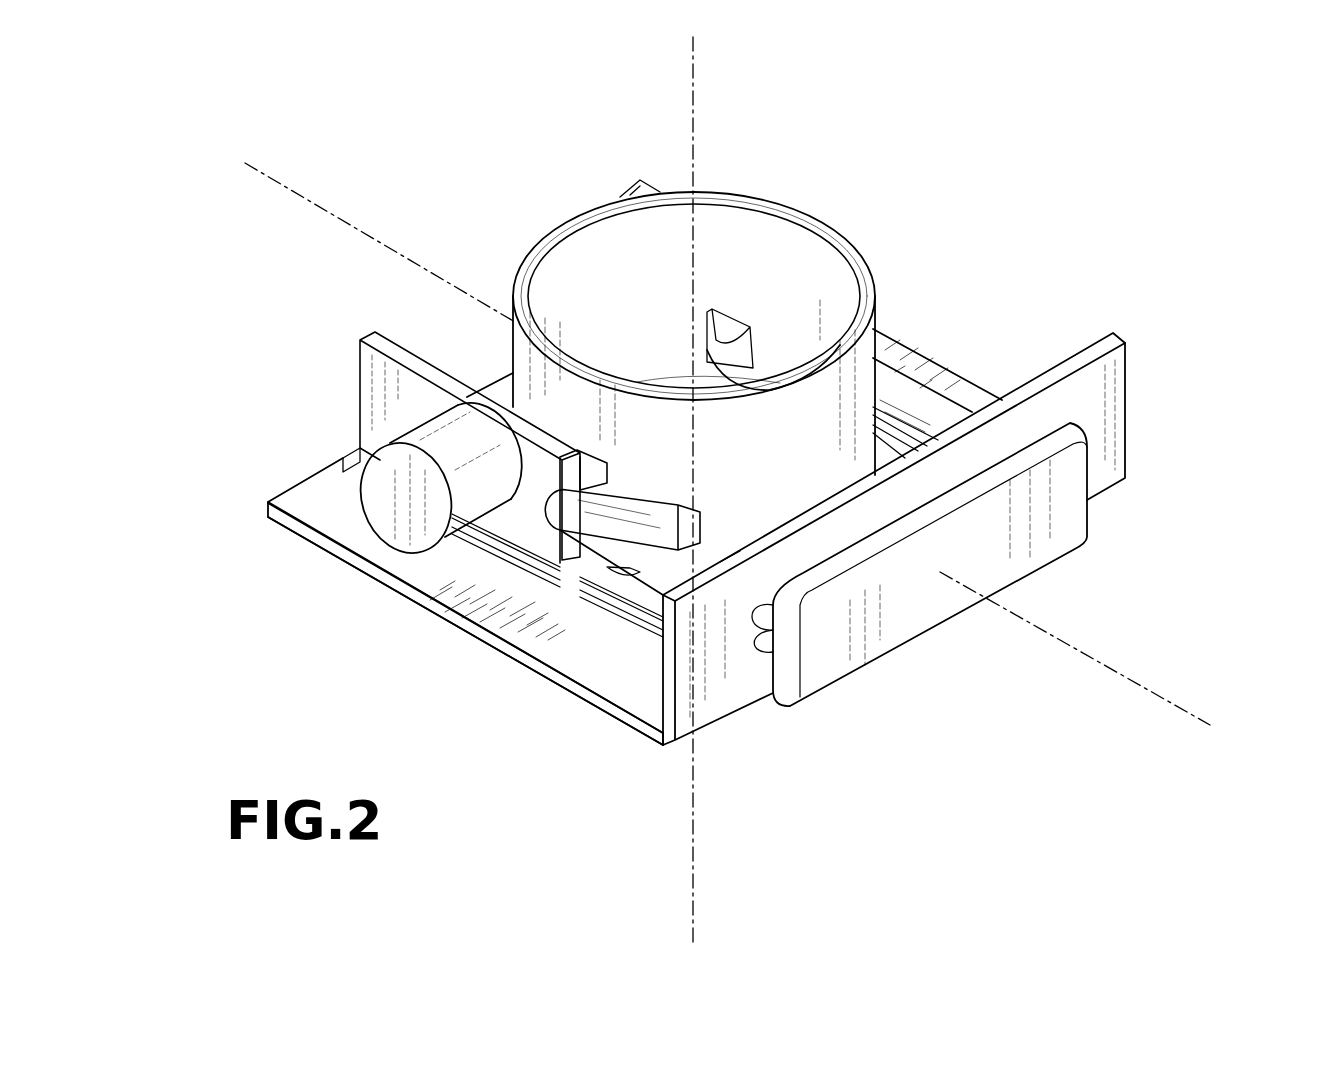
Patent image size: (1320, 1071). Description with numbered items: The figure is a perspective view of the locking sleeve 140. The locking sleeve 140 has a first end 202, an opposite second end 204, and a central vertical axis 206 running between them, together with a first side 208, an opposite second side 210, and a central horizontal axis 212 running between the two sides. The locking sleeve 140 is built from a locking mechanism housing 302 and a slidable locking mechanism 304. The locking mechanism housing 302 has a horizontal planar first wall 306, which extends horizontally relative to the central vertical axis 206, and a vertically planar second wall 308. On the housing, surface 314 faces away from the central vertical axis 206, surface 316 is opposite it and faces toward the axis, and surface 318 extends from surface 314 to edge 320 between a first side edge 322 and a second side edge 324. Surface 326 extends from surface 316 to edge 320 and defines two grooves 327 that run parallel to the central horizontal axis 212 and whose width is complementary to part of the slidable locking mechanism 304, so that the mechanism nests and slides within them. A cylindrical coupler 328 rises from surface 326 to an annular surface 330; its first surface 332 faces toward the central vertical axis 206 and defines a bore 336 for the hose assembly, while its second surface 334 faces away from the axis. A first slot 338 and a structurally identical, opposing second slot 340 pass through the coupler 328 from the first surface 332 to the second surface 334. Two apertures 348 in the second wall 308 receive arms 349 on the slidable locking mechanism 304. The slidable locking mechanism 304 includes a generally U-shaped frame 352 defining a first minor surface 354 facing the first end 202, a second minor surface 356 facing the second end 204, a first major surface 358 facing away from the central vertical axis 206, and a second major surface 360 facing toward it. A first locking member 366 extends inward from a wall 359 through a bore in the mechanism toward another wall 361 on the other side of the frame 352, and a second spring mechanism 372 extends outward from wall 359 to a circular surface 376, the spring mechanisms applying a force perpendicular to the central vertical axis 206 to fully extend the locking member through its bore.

The locking sleeve 140 is at (1070, 176).
The first end 202 is at (660, 252).
The second end 204 is at (460, 611).
The central vertical axis 206 is at (695, 60).
The first side 208 is at (975, 516).
The second side 210 is at (352, 490).
The central horizontal axis 212 is at (300, 196).
The locking mechanism housing 302 is at (460, 565).
The slidable locking mechanism 304 is at (1005, 589).
The horizontal planar first wall 306 is at (460, 565).
The vertically planar second wall 308 is at (975, 539).
The surface 314 is at (1090, 402).
The surface 316 is at (975, 505).
The surface 318 is at (595, 707).
The edge 320 is at (352, 494).
The first side edge 322 is at (952, 350).
The second side edge 324 is at (520, 657).
The surface 326 is at (425, 570).
The grooves 327 is at (622, 600).
The cylindrical coupler 328 is at (660, 293).
The annular surface 330 is at (540, 245).
The first surface 332 is at (633, 291).
The second surface 334 is at (693, 449).
The bore 336 is at (583, 252).
The first slot 338 is at (780, 336).
The second slot 340 is at (640, 500).
The apertures 348 is at (748, 654).
The arms 349 is at (607, 645).
The U-shaped frame 352 is at (1005, 589).
The first minor surface 354 is at (1027, 447).
The second minor surface 356 is at (900, 658).
The first major surface 358 is at (910, 612).
The wall 359 is at (630, 176).
The second major surface 360 is at (817, 560).
The wall 361 is at (368, 383).
The first locking member 366 is at (727, 323).
The second spring mechanism 372 is at (383, 522).
The circular surface 376 is at (385, 493).